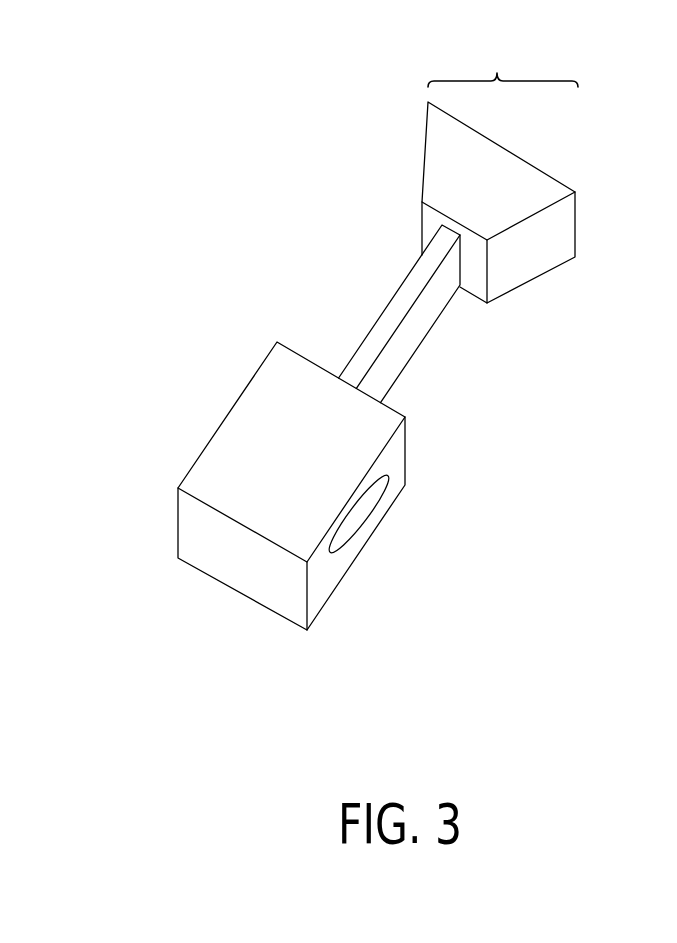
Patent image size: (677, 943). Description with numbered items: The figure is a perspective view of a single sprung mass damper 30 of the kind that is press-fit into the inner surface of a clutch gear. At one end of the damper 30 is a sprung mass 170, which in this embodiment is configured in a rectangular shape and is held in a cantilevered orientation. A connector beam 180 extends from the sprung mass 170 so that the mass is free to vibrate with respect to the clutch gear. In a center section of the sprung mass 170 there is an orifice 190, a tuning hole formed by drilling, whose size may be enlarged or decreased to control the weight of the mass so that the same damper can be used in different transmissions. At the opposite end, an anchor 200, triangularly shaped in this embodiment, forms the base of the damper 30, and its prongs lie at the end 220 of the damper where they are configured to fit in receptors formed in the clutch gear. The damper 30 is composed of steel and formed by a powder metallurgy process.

The sprung mass damper 30 is at (322, 218).
The sprung mass 170 is at (255, 415).
The connector beam 180 is at (417, 350).
The orifice 190 is at (362, 512).
The anchor 200 is at (525, 250).
The end 220 is at (503, 58).